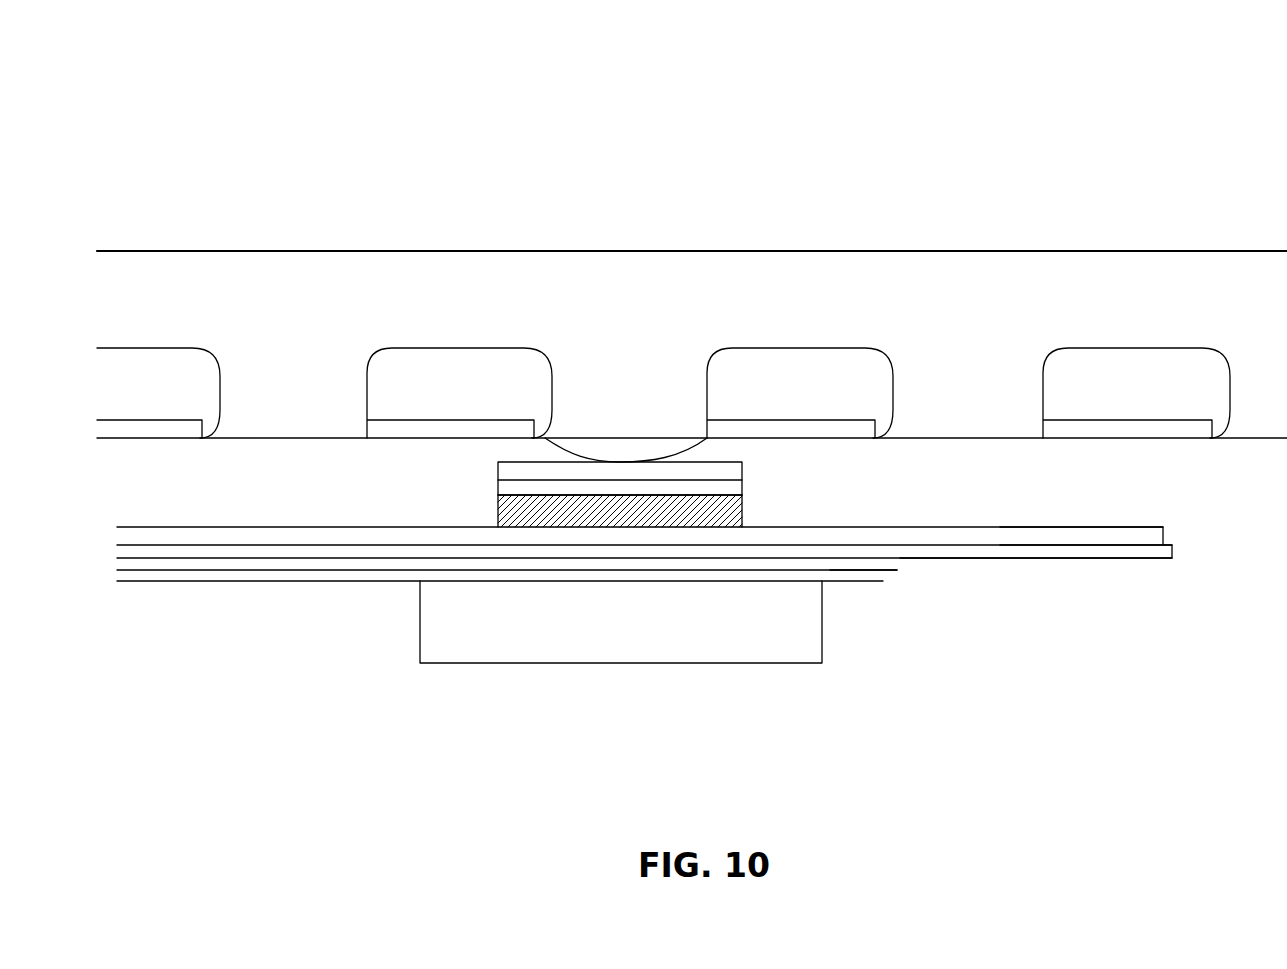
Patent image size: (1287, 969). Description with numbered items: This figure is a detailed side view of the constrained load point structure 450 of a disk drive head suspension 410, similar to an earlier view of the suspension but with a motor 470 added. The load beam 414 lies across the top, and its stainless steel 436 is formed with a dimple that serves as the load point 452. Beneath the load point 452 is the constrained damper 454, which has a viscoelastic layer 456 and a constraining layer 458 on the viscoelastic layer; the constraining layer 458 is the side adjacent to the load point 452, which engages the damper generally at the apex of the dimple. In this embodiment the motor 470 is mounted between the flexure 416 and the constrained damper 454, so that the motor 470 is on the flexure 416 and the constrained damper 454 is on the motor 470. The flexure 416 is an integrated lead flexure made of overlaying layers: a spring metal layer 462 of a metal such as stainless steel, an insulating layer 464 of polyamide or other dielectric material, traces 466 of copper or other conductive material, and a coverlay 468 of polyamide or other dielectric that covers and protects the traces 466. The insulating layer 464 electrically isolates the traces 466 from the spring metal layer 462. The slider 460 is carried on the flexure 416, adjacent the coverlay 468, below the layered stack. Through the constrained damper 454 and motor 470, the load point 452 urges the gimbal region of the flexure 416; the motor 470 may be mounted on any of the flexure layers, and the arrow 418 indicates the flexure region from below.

The suspension 410 is at (938, 193).
The load beam 414 is at (645, 313).
The flexure 416 is at (335, 552).
The floor panel 418 is at (458, 608).
The stainless steel 436 is at (322, 287).
The constrained load point structure 450 is at (608, 452).
The load point 452 is at (645, 453).
The constrained damper 454 is at (746, 488).
The viscoelastic layer 456 is at (510, 488).
The constraining layer 458 is at (530, 473).
The slider 460 is at (621, 622).
The spring metal layer 462 is at (965, 533).
The insulating layer 464 is at (1077, 552).
The traces 466 is at (955, 568).
The coverlay 468 is at (883, 575).
The motor 470 is at (730, 512).